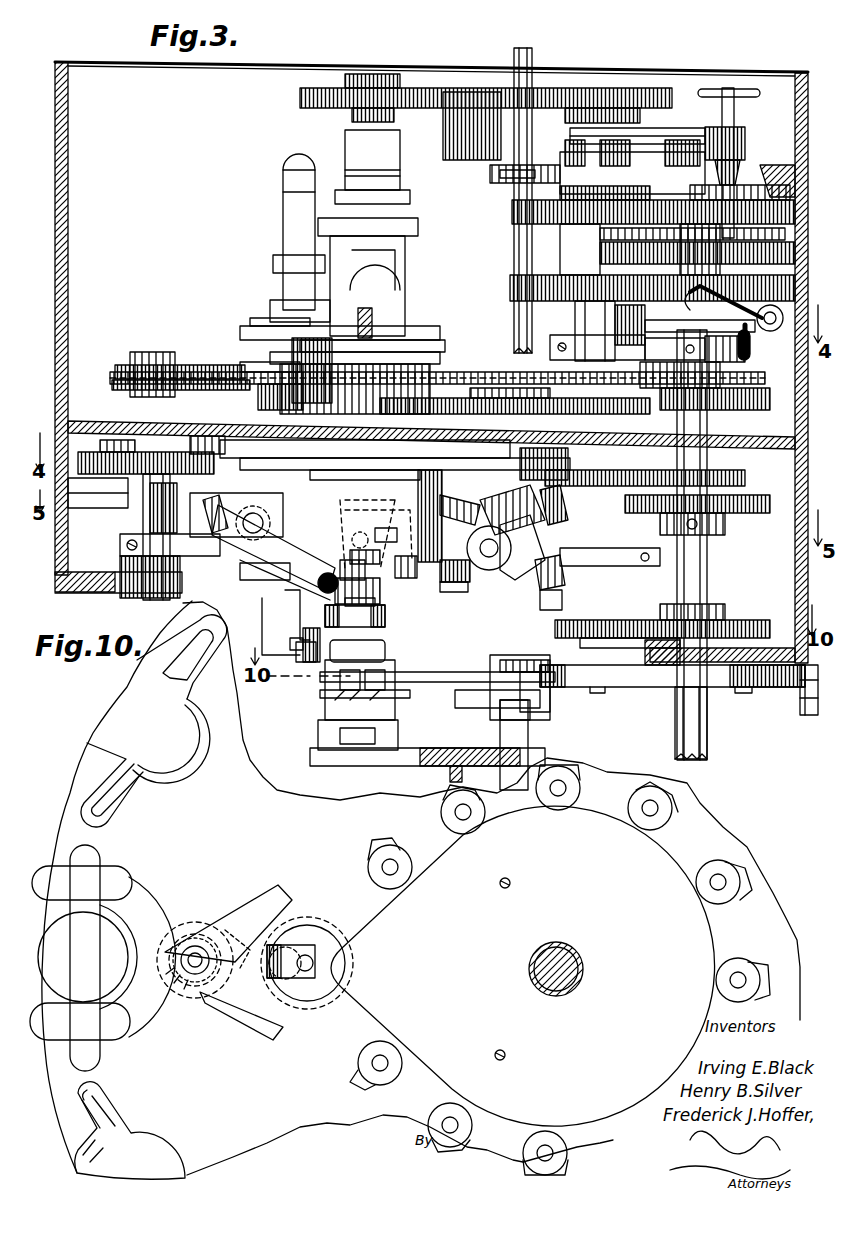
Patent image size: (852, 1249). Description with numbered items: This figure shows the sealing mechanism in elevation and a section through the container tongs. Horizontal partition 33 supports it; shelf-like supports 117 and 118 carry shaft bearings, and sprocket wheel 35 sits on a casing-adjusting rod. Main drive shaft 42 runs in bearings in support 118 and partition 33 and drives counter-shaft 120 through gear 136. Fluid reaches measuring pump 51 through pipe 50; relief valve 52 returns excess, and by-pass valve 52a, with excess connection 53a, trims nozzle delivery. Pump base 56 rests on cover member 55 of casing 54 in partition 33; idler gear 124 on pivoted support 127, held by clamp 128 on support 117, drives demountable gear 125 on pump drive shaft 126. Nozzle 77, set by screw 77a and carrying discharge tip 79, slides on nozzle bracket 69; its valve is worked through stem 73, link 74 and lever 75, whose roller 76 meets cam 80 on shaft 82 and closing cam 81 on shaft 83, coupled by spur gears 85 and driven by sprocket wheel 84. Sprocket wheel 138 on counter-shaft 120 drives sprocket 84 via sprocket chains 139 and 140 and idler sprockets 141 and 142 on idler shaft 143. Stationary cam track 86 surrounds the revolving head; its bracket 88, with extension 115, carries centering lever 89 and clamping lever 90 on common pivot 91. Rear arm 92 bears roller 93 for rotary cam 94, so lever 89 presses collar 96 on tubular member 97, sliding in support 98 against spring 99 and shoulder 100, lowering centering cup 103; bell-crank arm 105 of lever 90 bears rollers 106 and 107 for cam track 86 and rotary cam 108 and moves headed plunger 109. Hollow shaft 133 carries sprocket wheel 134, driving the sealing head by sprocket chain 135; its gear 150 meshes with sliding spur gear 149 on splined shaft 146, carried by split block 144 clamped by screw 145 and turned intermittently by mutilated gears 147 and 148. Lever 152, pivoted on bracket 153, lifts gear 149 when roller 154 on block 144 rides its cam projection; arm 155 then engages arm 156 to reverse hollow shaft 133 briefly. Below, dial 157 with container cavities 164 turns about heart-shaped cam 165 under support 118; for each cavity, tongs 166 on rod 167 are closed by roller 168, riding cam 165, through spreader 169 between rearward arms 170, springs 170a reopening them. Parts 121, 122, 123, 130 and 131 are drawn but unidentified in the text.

In FIG. 3, the horizontal partition 33 is at (98, 421).
In FIG. 3, the sprocket wheel 35 is at (490, 174).
In FIG. 3, the main drive shaft 42 is at (708, 733).
In FIG. 10, the main drive shaft 42 is at (557, 942).
In FIG. 3, the pipe 50 is at (445, 340).
In FIG. 3, the measuring pump 51 is at (350, 146).
In FIG. 3, the relief valve 52 is at (285, 205).
In FIG. 3, the adjustable by-pass valve 52a is at (381, 312).
In FIG. 3, the connection 53a is at (275, 322).
In FIG. 3, the casing 54 is at (506, 396).
In FIG. 3, the cover member 55 is at (405, 326).
In FIG. 3, the base 56 is at (370, 265).
In FIG. 3, the nozzle bracket 69 is at (255, 572).
In FIG. 3, the stem 73 is at (270, 525).
In FIG. 3, the link 74 is at (278, 545).
In FIG. 3, the lever 75 is at (240, 500).
In FIG. 3, the roller 76 is at (224, 498).
In FIG. 3, the nozzle 77 is at (262, 604).
In FIG. 3, the screw 77a is at (312, 627).
In FIG. 3, the discharge tip 79 is at (300, 672).
In FIG. 3, the cam 80 is at (210, 560).
In FIG. 3, the closing cam 81 is at (95, 510).
In FIG. 3, the shaft 82 is at (143, 538).
In FIG. 3, the shaft 83 is at (120, 453).
In FIG. 3, the sprocket wheel 84 is at (120, 378).
In FIG. 3, the spur gears 85 is at (118, 524).
In FIG. 3, the stationary cam track 86 is at (494, 482).
In FIG. 3, the bracket 88 is at (411, 570).
In FIG. 3, the lever 89 is at (380, 606).
In FIG. 3, the clamping lever 90 is at (412, 505).
In FIG. 3, the common pivot 91 is at (488, 560).
In FIG. 3, the rear arm 92 is at (518, 580).
In FIG. 3, the roller 93 is at (551, 570).
In FIG. 3, the rotary cam 94 is at (553, 589).
In FIG. 3, the collar 96 is at (362, 530).
In FIG. 3, the tubular member 97 is at (375, 595).
In FIG. 3, the support 98 is at (357, 591).
In FIG. 3, the spring 99 is at (394, 535).
In FIG. 3, the enlarged shoulder 100 is at (384, 557).
In FIG. 3, the container closure centering cup 103 is at (388, 616).
In FIG. 3, the rear bell-crank arm 105 is at (528, 500).
In FIG. 3, the roller 106 is at (460, 501).
In FIG. 3, the roller 107 is at (562, 505).
In FIG. 3, the rotary cam 108 is at (610, 545).
In FIG. 3, the headed plunger 109 is at (355, 468).
In FIG. 3, the extension 115 is at (457, 592).
In FIG. 3, the shelf-like support 117 is at (756, 168).
In FIG. 3, the shelf-like support 118 is at (770, 650).
In FIG. 3, the counter-shaft 120 is at (708, 418).
In FIG. 3, the gear 121 is at (752, 622).
In FIG. 3, the collar 122 is at (648, 655).
In FIG. 3, the gear 123 is at (630, 103).
In FIG. 3, the idler gear 124 is at (445, 120).
In FIG. 3, the driven gear 125 is at (300, 100).
In FIG. 3, the drive shaft 126 is at (362, 120).
In FIG. 3, the support 127 is at (660, 136).
In FIG. 3, the clamp 128 is at (740, 145).
In FIG. 3, the gear 130 is at (740, 490).
In FIG. 3, the gear 131 is at (640, 466).
In FIG. 3, the hollow shaft 133 is at (578, 335).
In FIG. 3, the sprocket wheel 134 is at (390, 450).
In FIG. 3, the sprocket chain 135 is at (515, 399).
In FIG. 3, the gear 136 is at (735, 530).
In FIG. 3, the sprocket wheel 138 is at (712, 412).
In FIG. 3, the sprocket chain 139 is at (525, 385).
In FIG. 3, the sprocket chain 140 is at (255, 400).
In FIG. 3, the idler sprocket 141 is at (290, 355).
In FIG. 3, the idler sprocket 142 is at (280, 368).
In FIG. 3, the idler shaft 143 is at (365, 488).
In FIG. 3, the split block 144 is at (665, 335).
In FIG. 3, the screw 145 is at (400, 368).
In FIG. 3, the hollow splined shaft 146 is at (666, 236).
In FIG. 3, the gear 147 is at (515, 213).
In FIG. 3, the gear 148 is at (746, 218).
In FIG. 3, the driving spur gear 149 is at (745, 257).
In FIG. 3, the driven gear 150 is at (520, 290).
In FIG. 3, the lever 152 is at (670, 312).
In FIG. 3, the bracket 153 is at (750, 355).
In FIG. 3, the roller 154 is at (745, 300).
In FIG. 3, the arm 155 is at (695, 349).
In FIG. 3, the arm 156 is at (597, 348).
In FIG. 3, the dial 157 is at (528, 748).
In FIG. 10, the dial 157 is at (278, 795).
In FIG. 3, the cavities 164 is at (322, 724).
In FIG. 10, the cavities 164 is at (140, 755).
In FIG. 3, the heart-shaped cam 165 is at (652, 688).
In FIG. 10, the heart-shaped cam 165 is at (523, 966).
In FIG. 3, the tongs 166 is at (425, 672).
In FIG. 10, the tongs 166 is at (165, 890).
In FIG. 3, the rod 167 is at (500, 730).
In FIG. 10, the rod 167 is at (198, 950).
In FIG. 3, the roller 168 is at (802, 700).
In FIG. 10, the roller 168 is at (375, 885).
In FIG. 3, the spreader 169 is at (545, 690).
In FIG. 10, the spreader 169 is at (310, 925).
In FIG. 3, the rearward arms 170 is at (518, 712).
In FIG. 10, the rearward arms 170 is at (280, 888).
In FIG. 10, the springs 170a is at (227, 949).